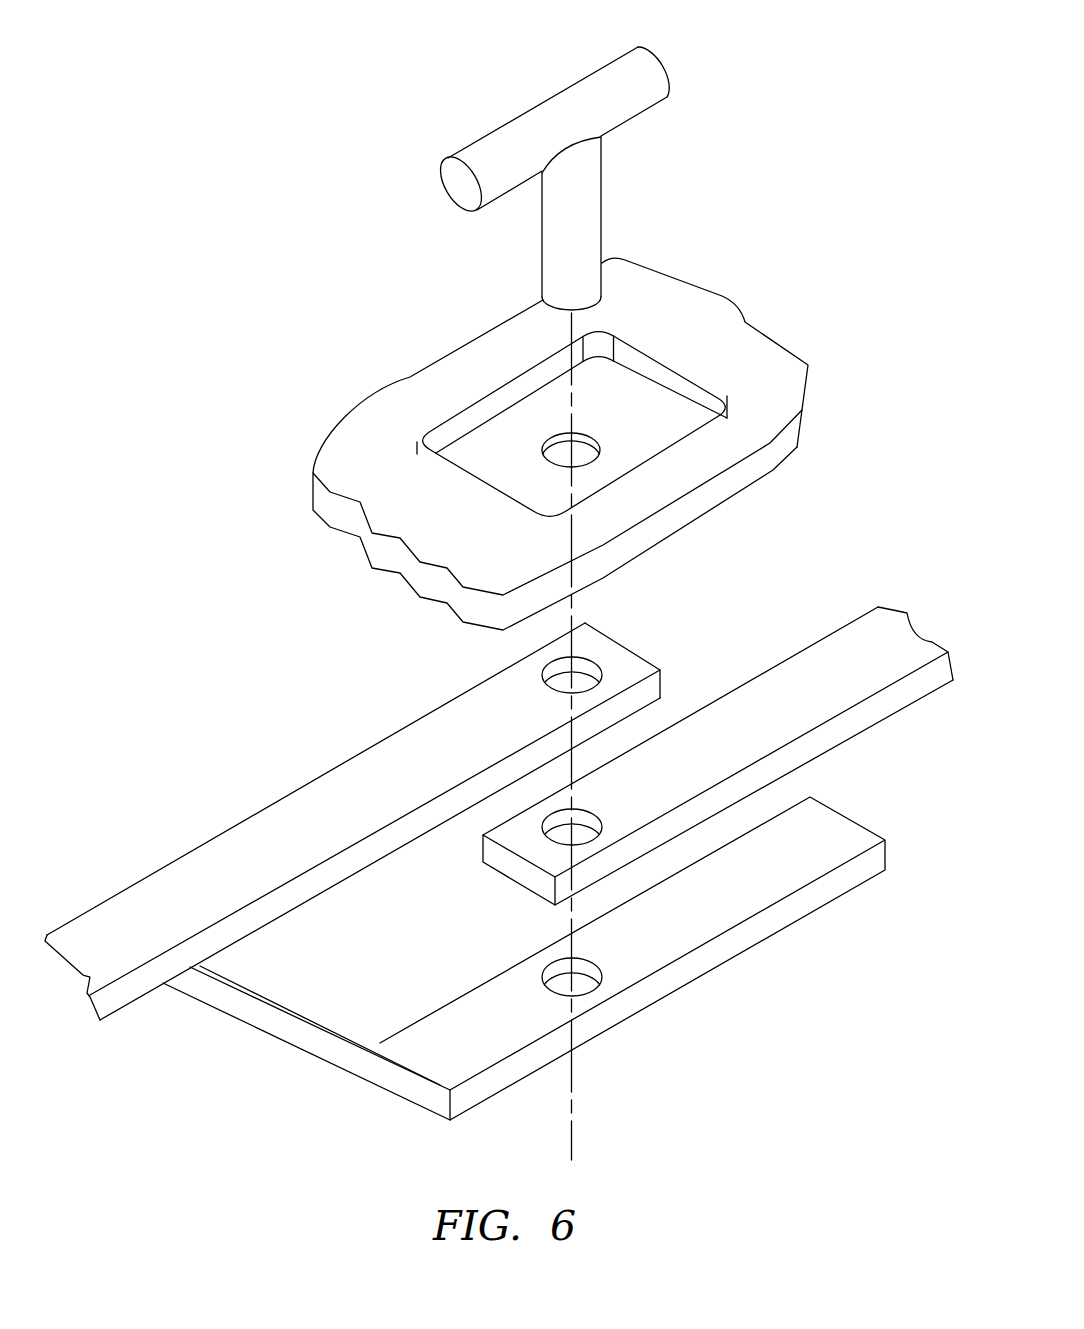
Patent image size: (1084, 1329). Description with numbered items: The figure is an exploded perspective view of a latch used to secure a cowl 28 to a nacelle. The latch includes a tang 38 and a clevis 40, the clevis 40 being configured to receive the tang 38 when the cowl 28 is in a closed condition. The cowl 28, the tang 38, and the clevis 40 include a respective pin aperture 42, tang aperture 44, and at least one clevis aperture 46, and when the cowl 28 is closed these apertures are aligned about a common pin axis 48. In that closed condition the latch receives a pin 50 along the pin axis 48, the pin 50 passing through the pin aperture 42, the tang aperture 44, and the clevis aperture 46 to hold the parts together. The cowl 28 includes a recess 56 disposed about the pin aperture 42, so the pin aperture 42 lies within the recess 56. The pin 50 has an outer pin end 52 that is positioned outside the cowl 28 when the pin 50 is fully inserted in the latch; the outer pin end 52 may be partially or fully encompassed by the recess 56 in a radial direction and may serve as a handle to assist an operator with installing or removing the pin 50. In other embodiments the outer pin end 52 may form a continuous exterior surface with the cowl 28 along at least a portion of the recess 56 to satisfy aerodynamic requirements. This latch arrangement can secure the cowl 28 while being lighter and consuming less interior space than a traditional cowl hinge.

The cowl 28 is at (670, 307).
The tang 38 is at (781, 681).
The clevis 40 is at (391, 763).
The pin aperture 42 is at (580, 453).
The tang aperture 44 is at (588, 822).
The clevis aperture 46 is at (548, 678).
The pin axis 48 is at (578, 1130).
The pin 50 is at (556, 263).
The outer pin end 52 is at (512, 157).
The recess 56 is at (678, 381).